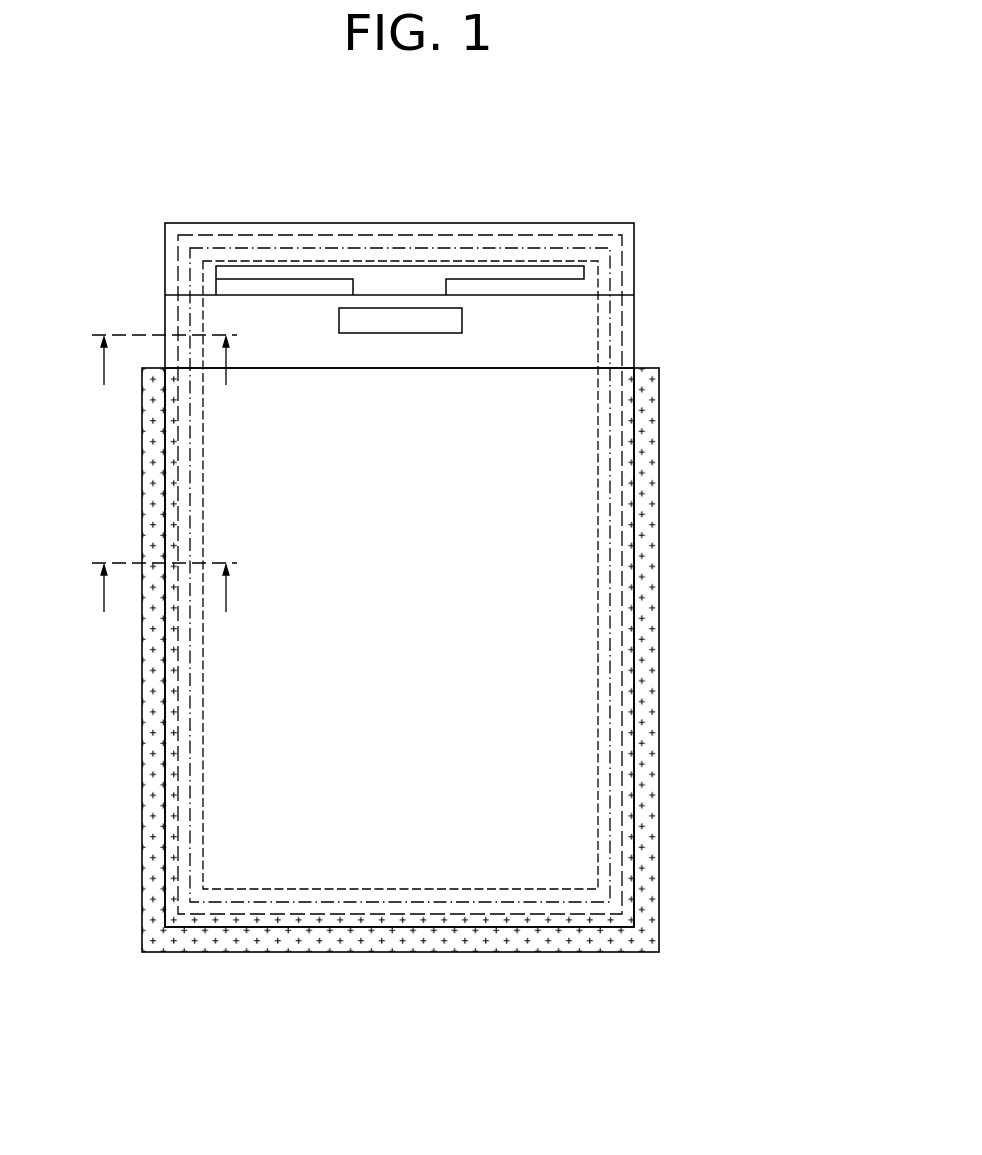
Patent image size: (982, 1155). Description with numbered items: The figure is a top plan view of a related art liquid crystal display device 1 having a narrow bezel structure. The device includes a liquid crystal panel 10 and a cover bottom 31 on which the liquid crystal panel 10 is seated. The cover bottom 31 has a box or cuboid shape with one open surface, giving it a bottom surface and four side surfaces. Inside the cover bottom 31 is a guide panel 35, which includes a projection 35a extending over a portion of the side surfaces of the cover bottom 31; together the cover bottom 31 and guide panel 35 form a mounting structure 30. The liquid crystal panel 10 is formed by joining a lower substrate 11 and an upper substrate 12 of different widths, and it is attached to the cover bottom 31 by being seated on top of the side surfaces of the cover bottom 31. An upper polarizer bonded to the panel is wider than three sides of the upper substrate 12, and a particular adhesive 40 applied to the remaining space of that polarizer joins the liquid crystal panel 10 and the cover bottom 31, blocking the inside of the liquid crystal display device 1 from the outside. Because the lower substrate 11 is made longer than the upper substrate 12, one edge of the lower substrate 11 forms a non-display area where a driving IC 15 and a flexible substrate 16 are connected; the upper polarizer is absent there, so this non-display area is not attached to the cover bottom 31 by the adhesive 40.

The liquid crystal display device 1 is at (662, 205).
The liquid crystal panel 10 is at (475, 575).
The lower substrate 11 is at (636, 317).
The upper substrate 12 is at (452, 647).
The driving IC 15 is at (448, 321).
The flexible substrate 16 is at (407, 283).
The mounting structure 30 is at (489, 575).
The cover bottom 31 is at (615, 742).
The guide panel 35 is at (605, 702).
The projection 35a is at (635, 261).
The adhesive 40 is at (643, 832).